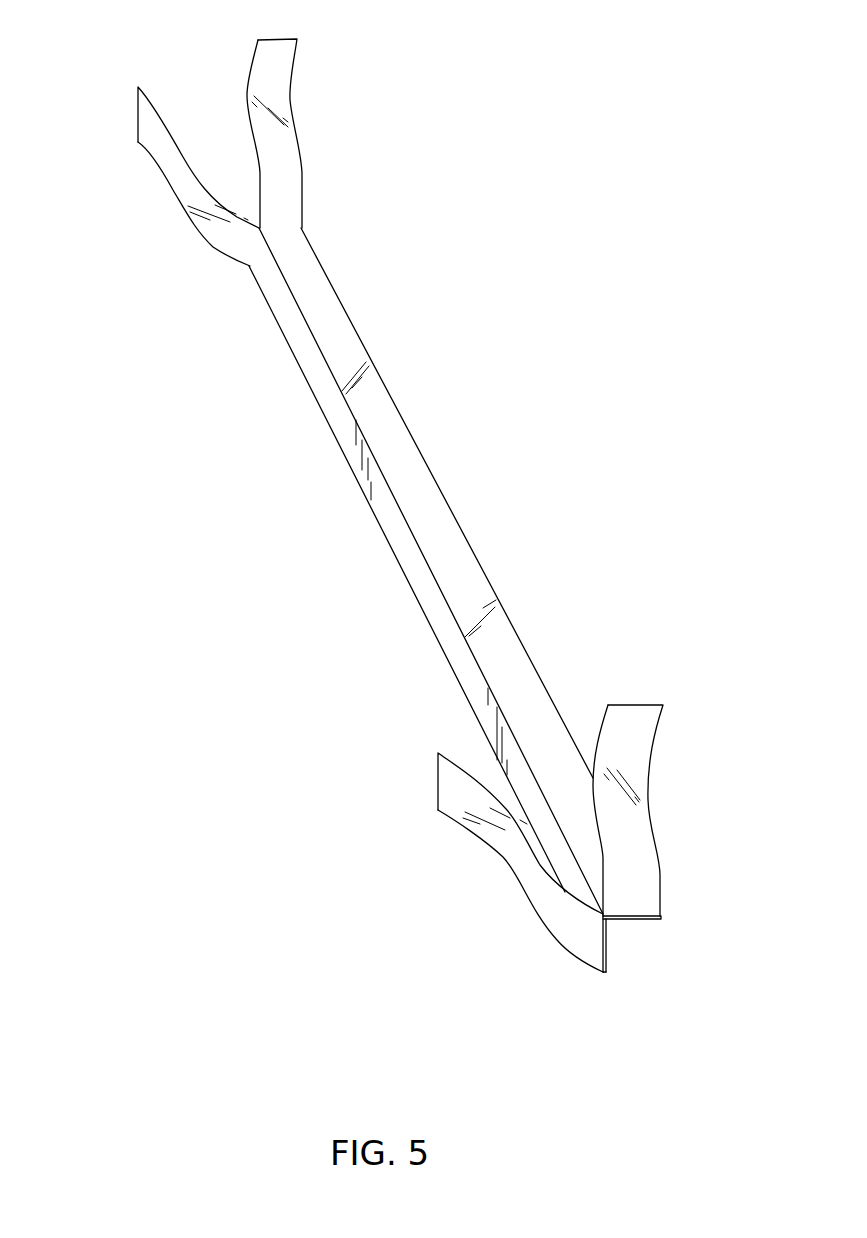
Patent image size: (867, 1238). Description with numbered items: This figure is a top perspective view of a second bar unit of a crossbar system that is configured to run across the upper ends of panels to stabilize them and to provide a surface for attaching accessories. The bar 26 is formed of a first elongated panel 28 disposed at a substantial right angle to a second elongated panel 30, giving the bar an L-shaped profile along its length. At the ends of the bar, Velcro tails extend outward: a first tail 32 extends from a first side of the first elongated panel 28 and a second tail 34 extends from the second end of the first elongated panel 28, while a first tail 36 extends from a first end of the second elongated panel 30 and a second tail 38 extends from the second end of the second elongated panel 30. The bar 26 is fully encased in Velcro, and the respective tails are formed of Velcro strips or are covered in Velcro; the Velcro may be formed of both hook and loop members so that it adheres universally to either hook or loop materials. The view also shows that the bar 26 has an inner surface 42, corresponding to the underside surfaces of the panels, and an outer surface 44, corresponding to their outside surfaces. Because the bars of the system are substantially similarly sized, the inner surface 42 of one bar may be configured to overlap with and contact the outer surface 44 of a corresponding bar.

The bar 26 is at (413, 526).
The first elongated panel 28 is at (640, 920).
The second elongated panel 30 is at (607, 953).
The first tail 32 is at (637, 738).
The second tail 34 is at (282, 60).
The first tail 36 is at (500, 835).
The second tail 38 is at (177, 178).
The inner surface 42 is at (618, 933).
The outer surface 44 is at (372, 398).